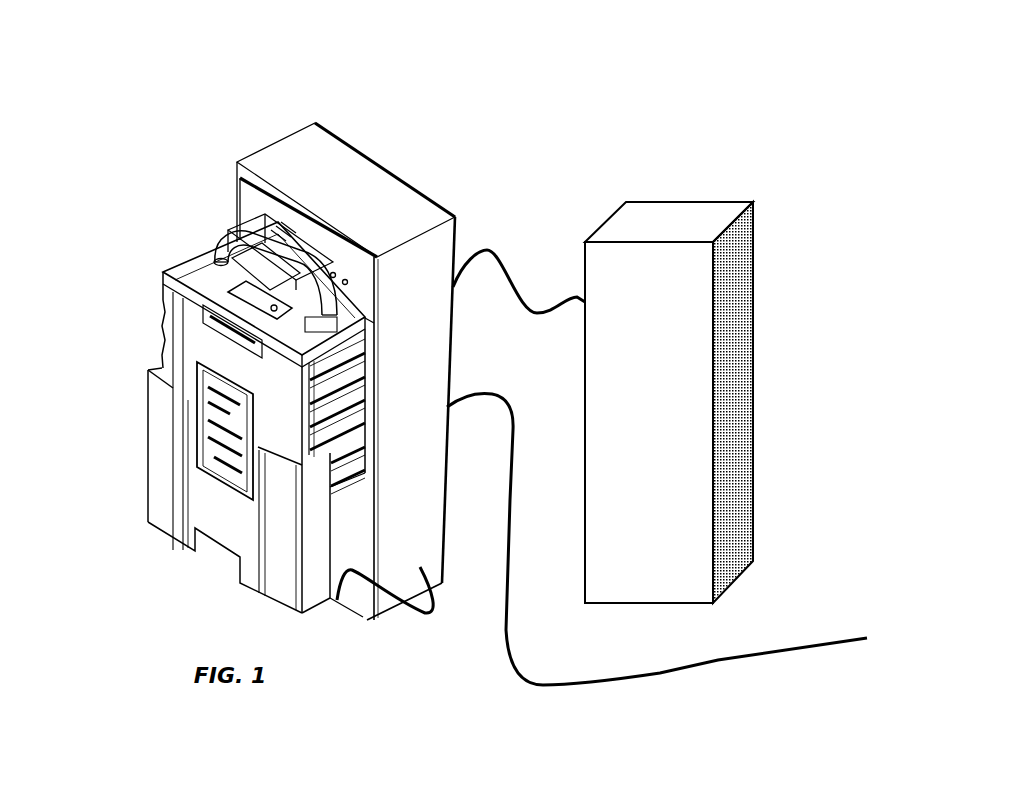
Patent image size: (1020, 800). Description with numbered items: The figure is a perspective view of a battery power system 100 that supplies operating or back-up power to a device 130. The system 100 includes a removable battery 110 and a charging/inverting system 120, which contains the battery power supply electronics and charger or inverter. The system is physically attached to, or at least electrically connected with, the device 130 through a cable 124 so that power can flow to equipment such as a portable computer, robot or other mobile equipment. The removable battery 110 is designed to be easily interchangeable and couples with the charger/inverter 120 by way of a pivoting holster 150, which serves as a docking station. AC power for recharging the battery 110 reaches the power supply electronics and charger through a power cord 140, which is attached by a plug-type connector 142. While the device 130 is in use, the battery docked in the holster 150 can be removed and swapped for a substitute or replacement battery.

The system 100 is at (514, 84).
The removable battery 110 is at (168, 263).
The charging/inverting system 120 is at (335, 182).
The cable 124 is at (520, 247).
The device 130 is at (657, 215).
The power cord 140 is at (718, 660).
The plug-type connector 142 is at (503, 388).
The pivoting holster 150 is at (158, 413).